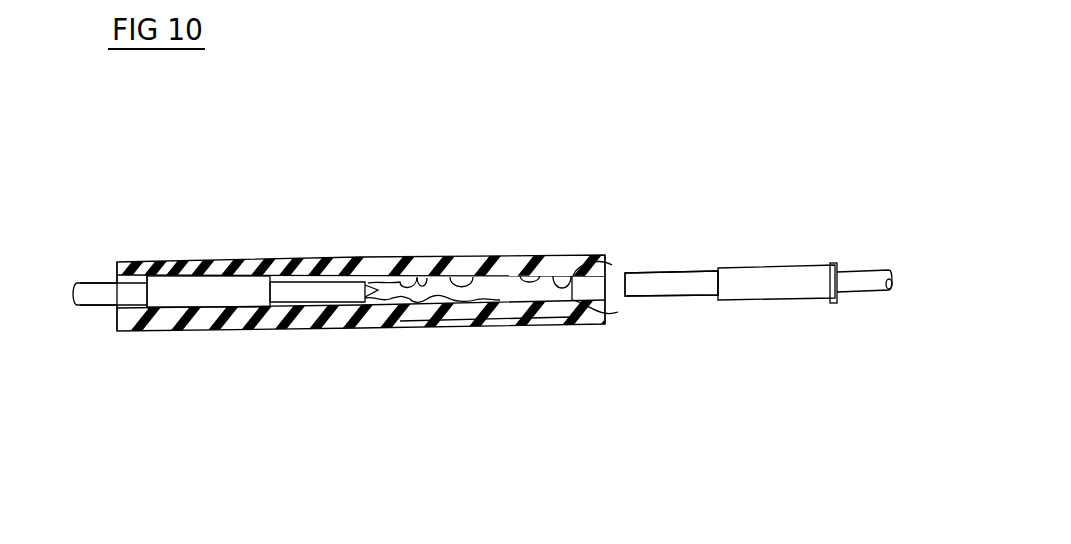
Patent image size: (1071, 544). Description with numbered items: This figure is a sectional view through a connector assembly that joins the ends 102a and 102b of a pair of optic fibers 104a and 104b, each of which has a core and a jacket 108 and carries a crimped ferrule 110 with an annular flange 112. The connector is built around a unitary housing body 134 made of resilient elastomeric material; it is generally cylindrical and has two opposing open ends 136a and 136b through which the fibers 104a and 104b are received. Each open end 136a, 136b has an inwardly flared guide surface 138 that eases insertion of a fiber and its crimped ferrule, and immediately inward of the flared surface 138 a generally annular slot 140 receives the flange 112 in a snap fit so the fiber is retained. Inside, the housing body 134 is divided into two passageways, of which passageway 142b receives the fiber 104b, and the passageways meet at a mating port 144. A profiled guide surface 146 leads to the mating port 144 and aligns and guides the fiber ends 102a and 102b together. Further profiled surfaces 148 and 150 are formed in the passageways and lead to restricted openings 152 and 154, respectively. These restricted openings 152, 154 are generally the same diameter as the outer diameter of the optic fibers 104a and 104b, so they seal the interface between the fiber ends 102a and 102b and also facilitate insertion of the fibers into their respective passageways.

The end of optic fiber 102a is at (384, 281).
The end of optic fiber 102b is at (627, 292).
The optic fiber 104a is at (84, 308).
The optic fiber 104b is at (670, 273).
The cable jacket 108 is at (97, 283).
The ferrule 110 is at (767, 275).
The annular flange 112 is at (836, 263).
The unitary housing body 134 is at (321, 250).
The open end 136a is at (120, 313).
The open end 136b is at (606, 258).
The inwardly flared guide surface 138 is at (118, 268).
The annular slot 140 is at (548, 277).
The passageway 142b is at (530, 285).
The mating port 144 is at (373, 301).
The profiled guide surface 146 is at (410, 302).
The profiled surface 148 is at (436, 305).
The profiled surface 150 is at (485, 312).
The restricted opening 152 is at (424, 273).
The restricted opening 154 is at (476, 277).